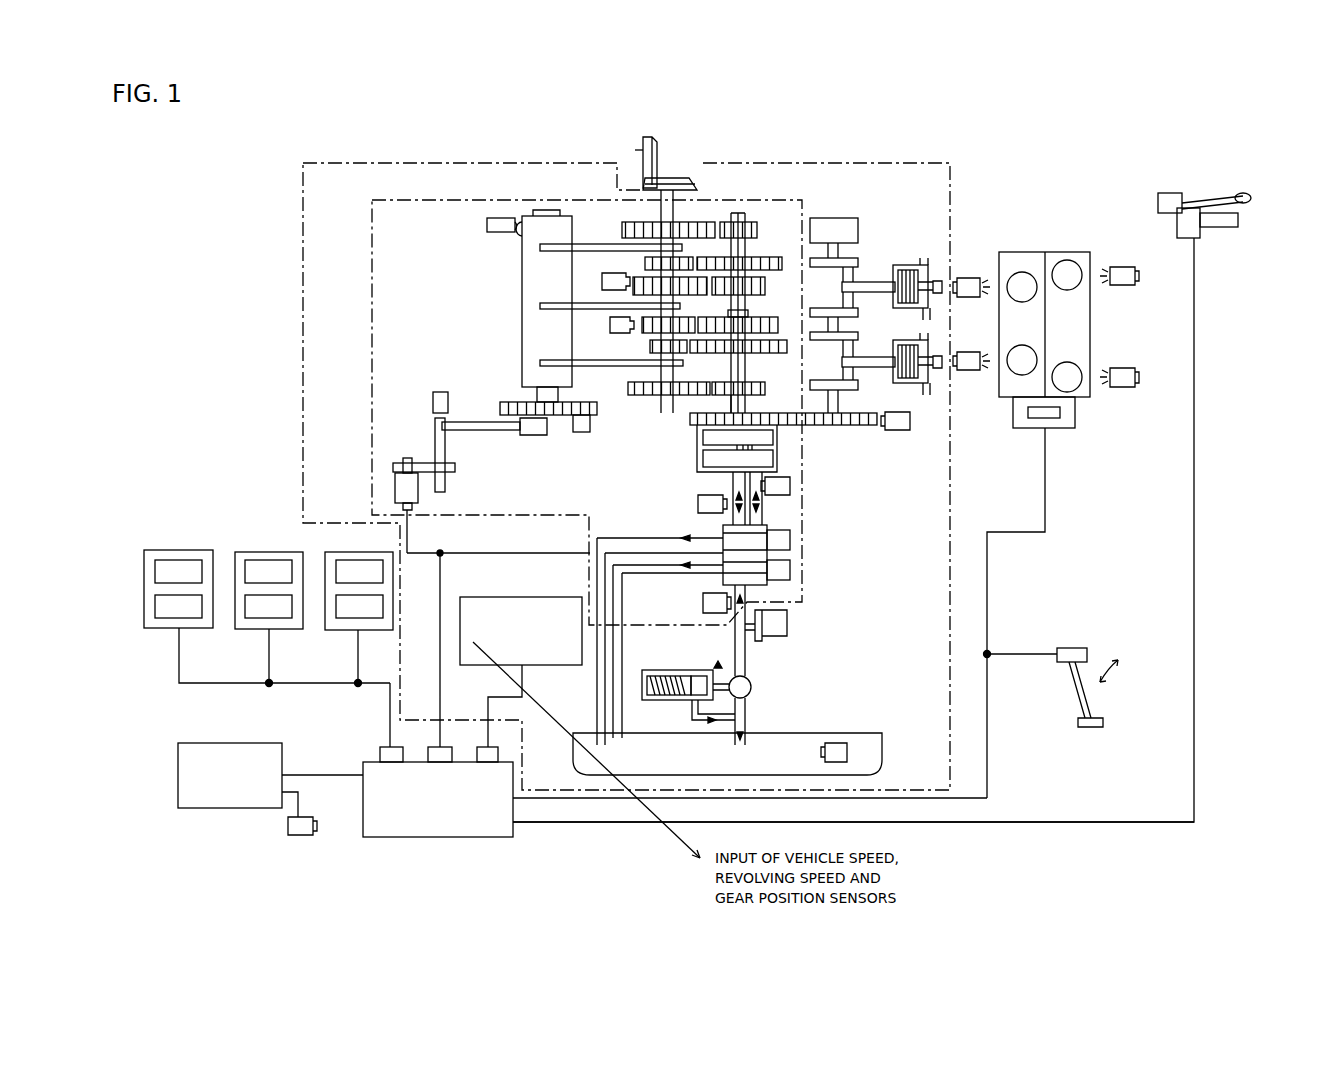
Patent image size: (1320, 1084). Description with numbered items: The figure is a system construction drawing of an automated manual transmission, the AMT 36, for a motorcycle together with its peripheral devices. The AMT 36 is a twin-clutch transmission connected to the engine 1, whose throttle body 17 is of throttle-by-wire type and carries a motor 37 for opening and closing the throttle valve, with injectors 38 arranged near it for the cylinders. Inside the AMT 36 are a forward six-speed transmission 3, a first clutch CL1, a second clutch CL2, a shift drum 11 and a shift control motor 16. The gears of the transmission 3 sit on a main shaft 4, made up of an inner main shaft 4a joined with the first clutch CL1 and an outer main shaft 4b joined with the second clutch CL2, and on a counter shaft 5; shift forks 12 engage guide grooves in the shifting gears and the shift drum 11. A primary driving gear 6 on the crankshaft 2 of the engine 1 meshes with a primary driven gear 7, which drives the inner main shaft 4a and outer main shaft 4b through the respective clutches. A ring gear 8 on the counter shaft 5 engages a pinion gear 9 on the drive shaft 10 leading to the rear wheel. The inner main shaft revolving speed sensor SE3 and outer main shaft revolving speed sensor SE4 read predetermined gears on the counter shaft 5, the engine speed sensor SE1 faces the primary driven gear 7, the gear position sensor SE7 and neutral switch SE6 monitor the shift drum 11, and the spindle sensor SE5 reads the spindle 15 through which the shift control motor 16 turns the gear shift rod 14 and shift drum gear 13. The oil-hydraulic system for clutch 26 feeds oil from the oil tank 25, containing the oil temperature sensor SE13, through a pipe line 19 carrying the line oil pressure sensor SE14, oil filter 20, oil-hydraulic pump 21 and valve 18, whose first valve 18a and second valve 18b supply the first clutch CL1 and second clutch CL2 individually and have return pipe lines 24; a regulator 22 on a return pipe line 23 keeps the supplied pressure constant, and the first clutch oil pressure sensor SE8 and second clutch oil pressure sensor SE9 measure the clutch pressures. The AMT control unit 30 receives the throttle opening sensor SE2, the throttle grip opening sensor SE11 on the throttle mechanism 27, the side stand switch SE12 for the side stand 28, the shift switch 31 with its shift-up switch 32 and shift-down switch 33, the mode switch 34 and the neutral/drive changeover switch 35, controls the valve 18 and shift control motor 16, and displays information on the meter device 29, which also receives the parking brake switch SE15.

The engine 1 is at (937, 163).
The crankshaft 2 is at (838, 400).
The forward six-speed transmission 3 is at (650, 430).
The main shaft 4 is at (752, 363).
The inner main shaft 4a is at (747, 403).
The outer main shaft 4b is at (730, 404).
The counter shaft 5 is at (662, 373).
The primary driving gear 6 is at (863, 427).
The primary driven gear 7 is at (692, 430).
The ring gear 8 is at (683, 183).
The pinion gear 9 is at (660, 152).
The drive shaft 10 is at (641, 152).
The shift drum 11 is at (565, 222).
The shift forks 12 is at (540, 250).
The shift drum gear 13 is at (568, 415).
The gear shift rod 14 is at (484, 421).
The spindle 15 is at (434, 446).
The shift control motor 16 is at (394, 487).
The throttle body 17 is at (1092, 326).
The valve 18 is at (866, 530).
The first valve 18a is at (792, 540).
The second valve 18b is at (792, 570).
The pipe line 19 is at (750, 600).
The oil filter 20 is at (788, 623).
The oil-hydraulic pump 21 is at (753, 686).
The regulator 22 is at (656, 669).
The return pipe line 23 is at (690, 715).
The return pipe lines 24 is at (612, 700).
The oil tank 25 is at (573, 757).
The oil-hydraulic system for clutch 26 is at (898, 690).
The throttle mechanism 27 is at (1220, 235).
The side stand 28 is at (1075, 695).
The meter device 29 is at (250, 743).
The AMT control unit 30 is at (514, 830).
The shift switch 31 is at (193, 550).
The shift-up switch 32 is at (158, 565).
The shift-down switch 33 is at (162, 616).
The mode switch 34 is at (285, 552).
The neutral/drive changeover switch 35 is at (340, 552).
The automated manual transmission (AMT) 36 is at (370, 235).
The motor 37 is at (1013, 412).
The injectors 38 is at (968, 277).
The first clutch CL1 is at (776, 458).
The second clutch CL2 is at (776, 436).
The engine speed sensor SE1 is at (897, 430).
The throttle opening sensor SE2 is at (1062, 413).
The inner main shaft revolving speed sensor SE3 is at (602, 283).
The outer main shaft revolving speed sensor SE4 is at (610, 327).
The spindle sensor SE5 is at (439, 391).
The neutral switch SE6 is at (502, 217).
The gear position sensor SE7 is at (530, 435).
The first clutch oil pressure sensor SE8 is at (792, 485).
The second clutch oil pressure sensor SE9 is at (697, 505).
The throttle grip opening sensor SE11 is at (1158, 200).
The side stand switch SE12 is at (1088, 655).
The oil temperature sensor SE13 is at (840, 742).
The line oil pressure sensor SE14 is at (702, 604).
The parking brake switch SE15 is at (287, 827).